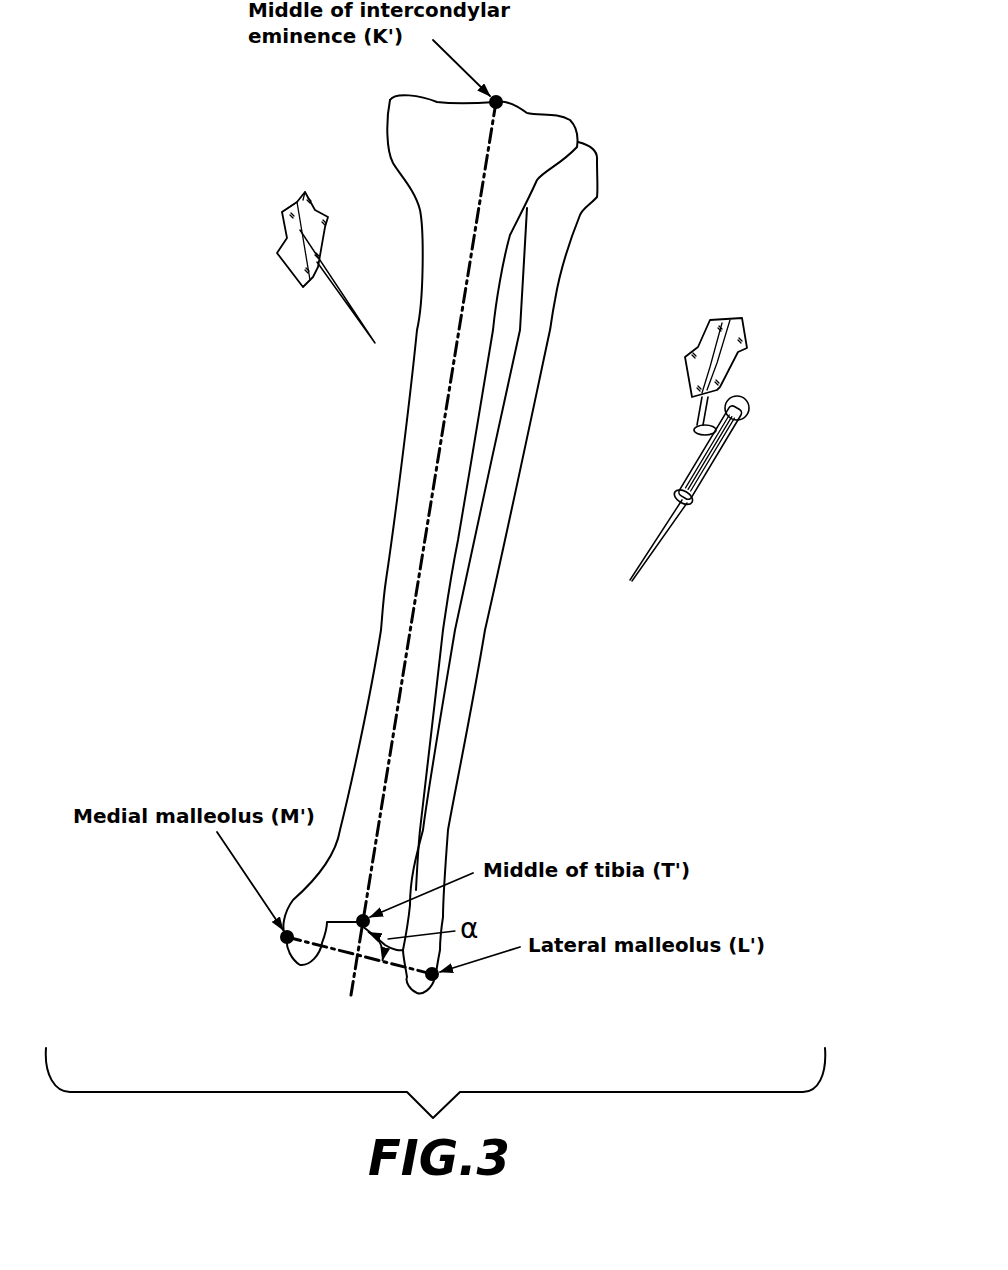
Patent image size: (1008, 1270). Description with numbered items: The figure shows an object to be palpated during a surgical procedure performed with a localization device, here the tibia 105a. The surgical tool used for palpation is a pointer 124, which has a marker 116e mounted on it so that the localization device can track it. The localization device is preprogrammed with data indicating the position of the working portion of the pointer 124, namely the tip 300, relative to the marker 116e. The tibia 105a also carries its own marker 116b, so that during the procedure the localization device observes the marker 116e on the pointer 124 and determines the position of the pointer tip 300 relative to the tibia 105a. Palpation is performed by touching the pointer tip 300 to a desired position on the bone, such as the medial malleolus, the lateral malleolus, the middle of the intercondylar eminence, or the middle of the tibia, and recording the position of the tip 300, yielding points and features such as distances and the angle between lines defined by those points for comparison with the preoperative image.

The tibia 105a is at (385, 580).
The marker 116b is at (280, 222).
The marker 116e is at (733, 320).
The pointer 124 is at (725, 450).
The tip 300 is at (645, 562).